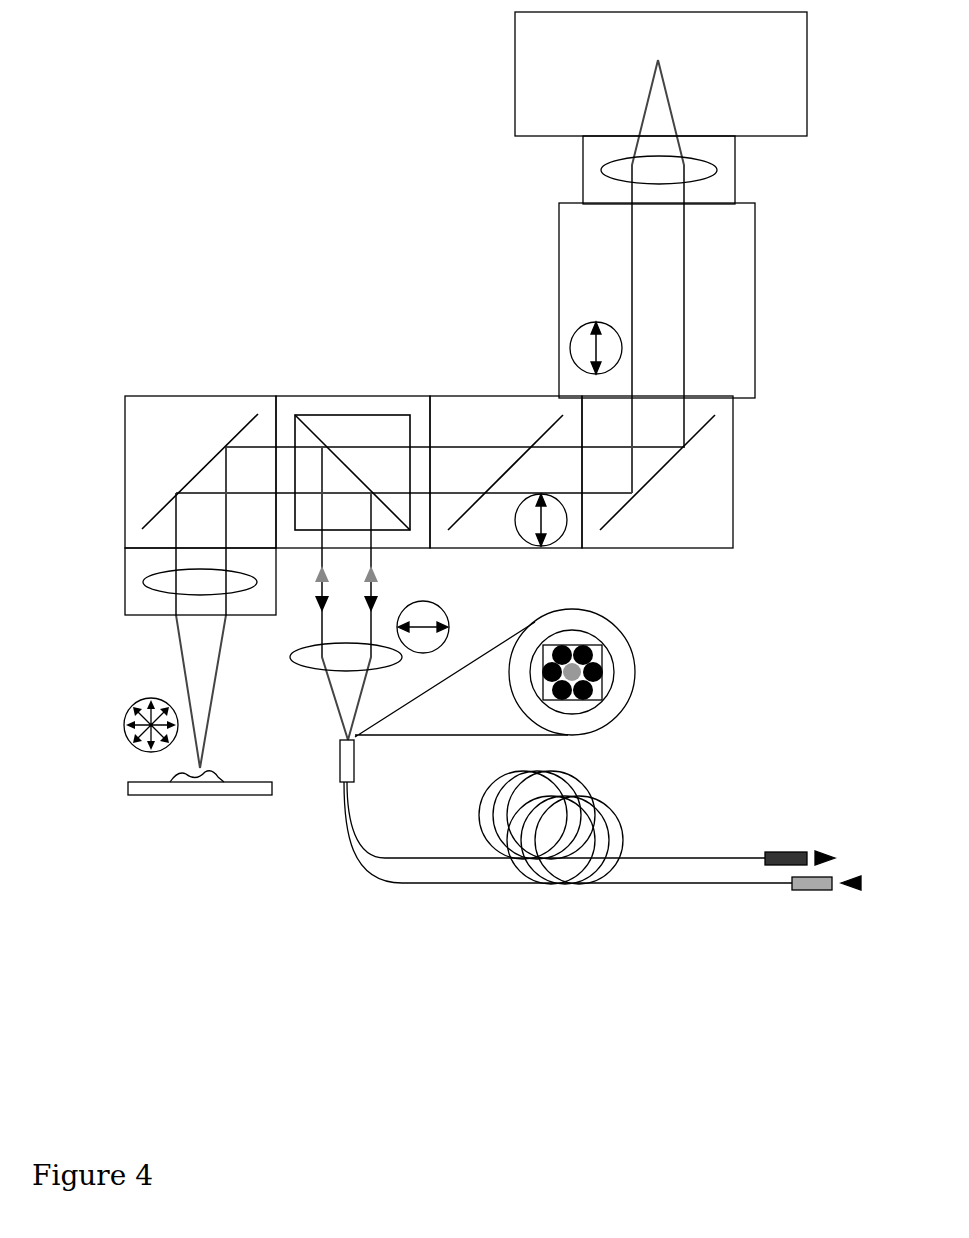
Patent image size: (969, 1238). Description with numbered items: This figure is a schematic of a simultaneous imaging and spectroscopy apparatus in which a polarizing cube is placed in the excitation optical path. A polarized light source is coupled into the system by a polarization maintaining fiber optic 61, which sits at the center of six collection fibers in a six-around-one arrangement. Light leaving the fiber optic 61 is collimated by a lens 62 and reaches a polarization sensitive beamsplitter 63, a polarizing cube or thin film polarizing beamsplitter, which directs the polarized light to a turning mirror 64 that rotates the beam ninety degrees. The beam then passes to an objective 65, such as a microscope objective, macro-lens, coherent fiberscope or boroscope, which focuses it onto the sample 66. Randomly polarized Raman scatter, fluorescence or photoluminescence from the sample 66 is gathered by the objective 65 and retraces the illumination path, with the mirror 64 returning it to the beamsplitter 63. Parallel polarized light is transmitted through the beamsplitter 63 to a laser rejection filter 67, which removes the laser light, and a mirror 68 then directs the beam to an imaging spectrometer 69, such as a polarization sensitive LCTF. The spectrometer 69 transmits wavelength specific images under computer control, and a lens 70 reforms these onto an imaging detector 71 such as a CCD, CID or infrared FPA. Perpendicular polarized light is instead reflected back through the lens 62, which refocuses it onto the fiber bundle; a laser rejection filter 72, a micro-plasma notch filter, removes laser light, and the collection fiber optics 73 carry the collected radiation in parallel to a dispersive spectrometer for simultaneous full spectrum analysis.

The polarization maintaining fiber optic 61 is at (580, 682).
The lens 62 is at (360, 667).
The polarization sensitive beamsplitter 63 is at (353, 458).
The turning mirror 64 is at (200, 472).
The objective 65 is at (178, 581).
The sample 66 is at (178, 786).
The laser rejection filter 67 is at (506, 458).
The mirror 68 is at (657, 472).
The imaging spectrometer 69 is at (681, 300).
The lens 70 is at (632, 170).
The imaging detector 71 is at (685, 74).
The laser rejection filter 72 is at (604, 646).
The collection fiber optics 73 is at (606, 673).